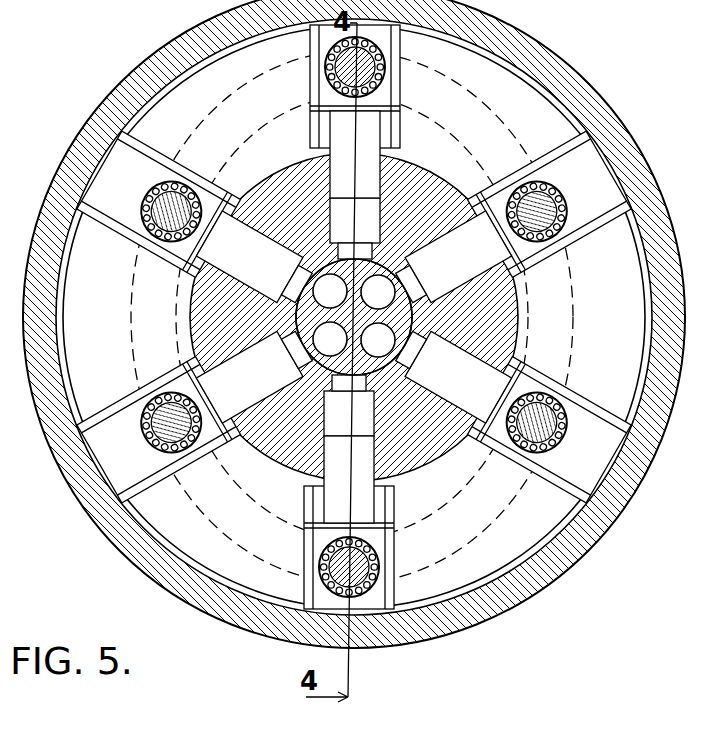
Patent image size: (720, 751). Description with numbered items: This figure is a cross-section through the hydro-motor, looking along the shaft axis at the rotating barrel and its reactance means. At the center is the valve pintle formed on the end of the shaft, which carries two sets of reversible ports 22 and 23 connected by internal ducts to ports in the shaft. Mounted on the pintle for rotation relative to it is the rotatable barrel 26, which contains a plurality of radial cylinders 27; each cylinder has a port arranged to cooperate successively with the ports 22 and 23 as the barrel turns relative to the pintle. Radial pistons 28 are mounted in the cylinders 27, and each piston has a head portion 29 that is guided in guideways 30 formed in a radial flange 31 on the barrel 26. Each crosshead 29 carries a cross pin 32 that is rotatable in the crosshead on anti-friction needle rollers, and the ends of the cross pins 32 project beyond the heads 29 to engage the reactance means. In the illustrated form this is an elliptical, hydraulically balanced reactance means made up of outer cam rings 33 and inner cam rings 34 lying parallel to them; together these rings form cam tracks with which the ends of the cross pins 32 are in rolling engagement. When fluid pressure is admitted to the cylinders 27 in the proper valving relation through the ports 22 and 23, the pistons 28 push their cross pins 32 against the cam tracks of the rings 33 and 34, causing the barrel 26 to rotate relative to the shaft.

The reversible ports 22 is at (354, 315).
The reversible ports 23 is at (354, 315).
The rotatable barrel 26 is at (462, 166).
The radial cylinders 27 is at (352, 317).
The radial pistons 28 is at (376, 492).
The head portion 29 is at (388, 64).
The guideways 30 is at (312, 78).
The radial flange 31 is at (523, 133).
The cross pin 32 is at (180, 452).
The outer cam rings 33 is at (578, 285).
The inner cam rings 34 is at (533, 335).